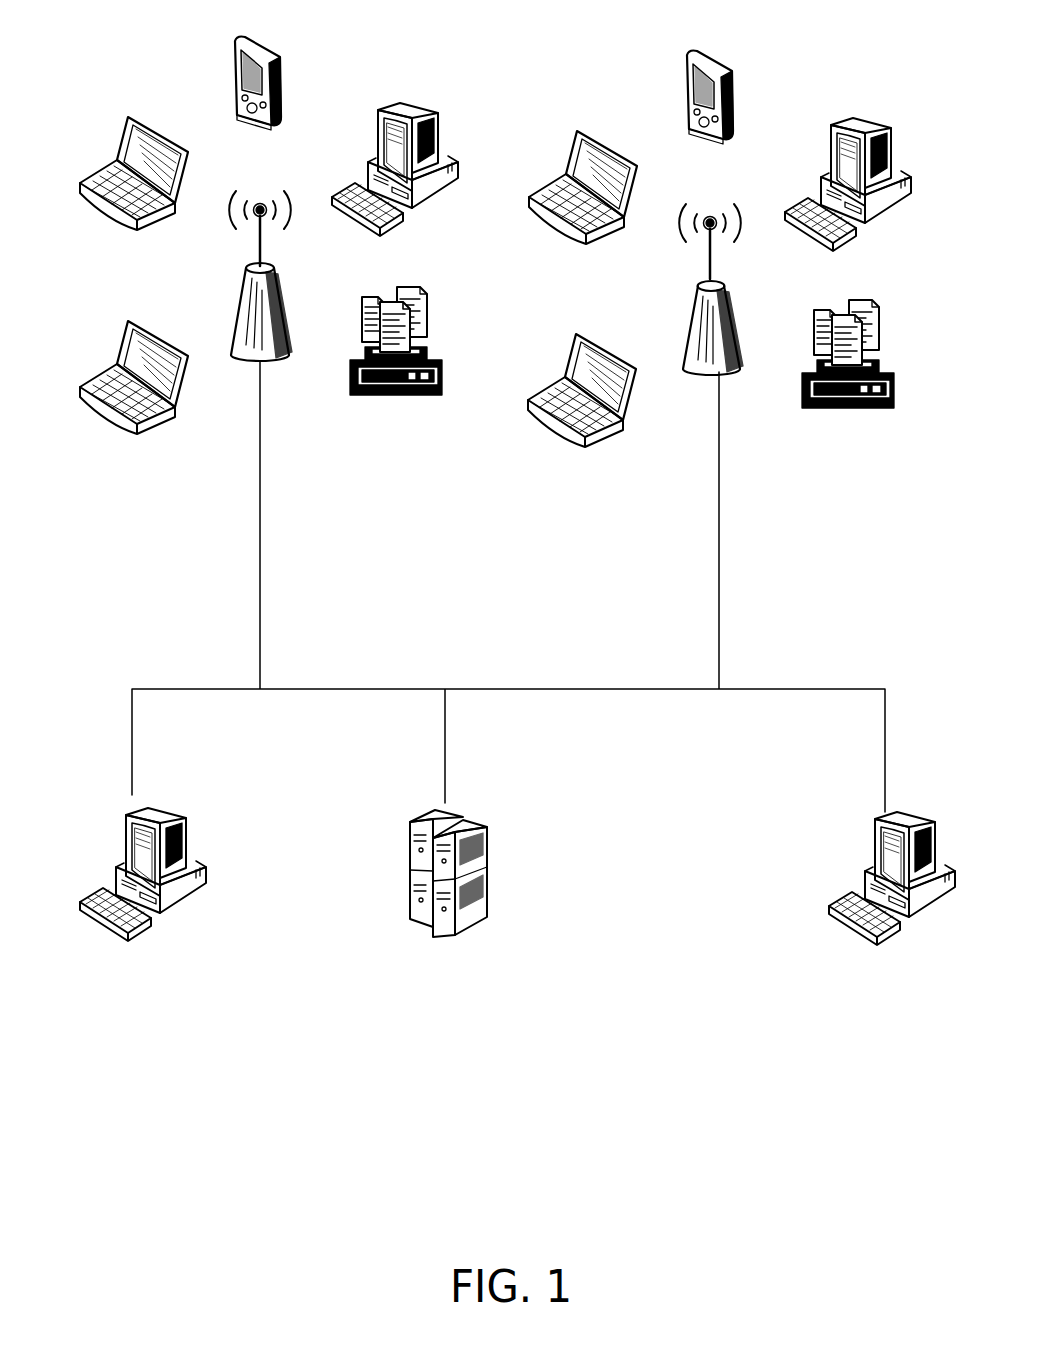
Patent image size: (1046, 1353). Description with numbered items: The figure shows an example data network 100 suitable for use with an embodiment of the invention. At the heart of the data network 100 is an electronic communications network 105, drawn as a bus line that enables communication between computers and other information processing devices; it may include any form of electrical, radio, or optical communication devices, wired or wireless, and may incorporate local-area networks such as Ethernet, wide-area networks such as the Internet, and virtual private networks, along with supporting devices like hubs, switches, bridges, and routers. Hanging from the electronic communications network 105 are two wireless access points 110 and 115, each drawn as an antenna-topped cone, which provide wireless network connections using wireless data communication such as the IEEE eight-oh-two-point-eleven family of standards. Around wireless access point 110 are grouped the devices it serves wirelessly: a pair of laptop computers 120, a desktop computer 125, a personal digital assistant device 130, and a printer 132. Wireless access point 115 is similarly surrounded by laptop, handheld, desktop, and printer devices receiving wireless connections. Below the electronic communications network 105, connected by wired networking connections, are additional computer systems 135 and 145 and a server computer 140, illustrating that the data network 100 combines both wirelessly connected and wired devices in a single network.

The data network 100 is at (316, 1143).
The electronic communications network 105 is at (558, 687).
The wireless access point 110 is at (278, 362).
The wireless access point 115 is at (740, 373).
The laptop computers 120 is at (142, 308).
The desktop computer 125 is at (433, 207).
The personal digital assistant device 130 is at (288, 62).
The printer 132 is at (422, 402).
The computer system 135 is at (198, 910).
The server computer 140 is at (482, 908).
The computer system 145 is at (823, 910).